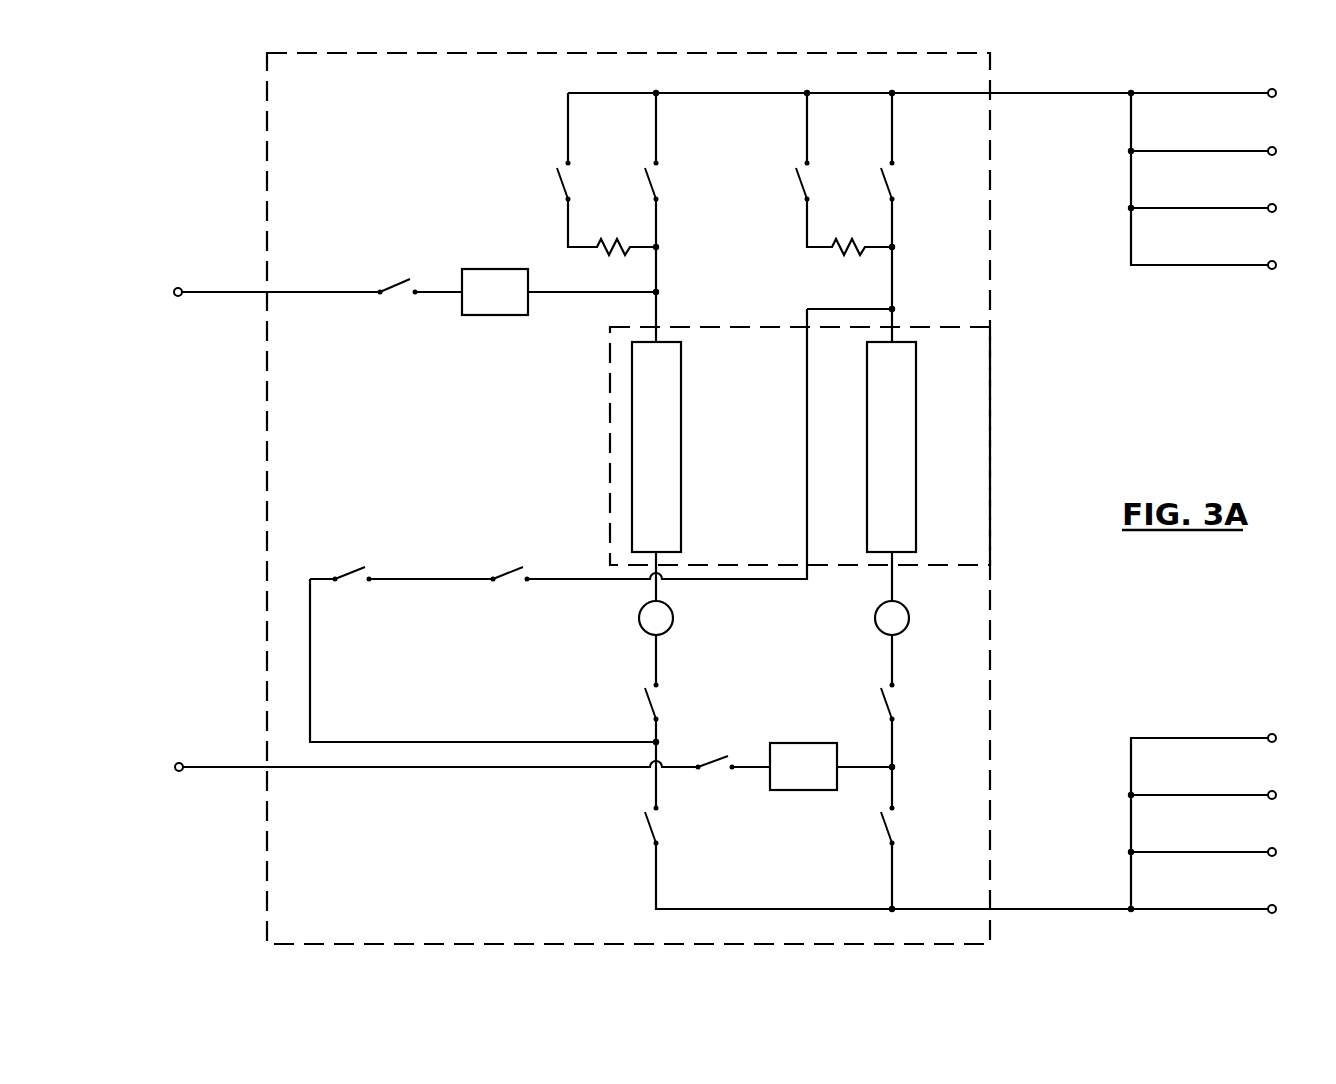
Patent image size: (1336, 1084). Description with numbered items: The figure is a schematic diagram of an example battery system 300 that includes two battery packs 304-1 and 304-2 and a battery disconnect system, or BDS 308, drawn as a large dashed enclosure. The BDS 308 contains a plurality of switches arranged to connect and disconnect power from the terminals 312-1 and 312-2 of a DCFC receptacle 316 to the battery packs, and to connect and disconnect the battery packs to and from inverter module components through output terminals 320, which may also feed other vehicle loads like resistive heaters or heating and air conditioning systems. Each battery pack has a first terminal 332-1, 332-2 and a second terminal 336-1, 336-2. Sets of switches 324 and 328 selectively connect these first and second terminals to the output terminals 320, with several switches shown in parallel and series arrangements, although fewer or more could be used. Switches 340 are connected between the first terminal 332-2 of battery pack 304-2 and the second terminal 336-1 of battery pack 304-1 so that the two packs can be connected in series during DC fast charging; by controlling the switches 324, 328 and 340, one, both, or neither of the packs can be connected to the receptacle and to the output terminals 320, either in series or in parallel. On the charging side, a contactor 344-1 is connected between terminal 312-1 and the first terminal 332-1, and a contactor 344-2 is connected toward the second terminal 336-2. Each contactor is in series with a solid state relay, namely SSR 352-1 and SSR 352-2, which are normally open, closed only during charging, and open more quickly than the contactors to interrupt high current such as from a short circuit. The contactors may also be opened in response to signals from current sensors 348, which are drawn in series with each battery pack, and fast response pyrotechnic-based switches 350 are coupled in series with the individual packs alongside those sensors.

The battery system 300 is at (168, 136).
The battery pack 304-1 is at (682, 447).
The battery pack 304-2 is at (917, 447).
The BDS 308 is at (265, 500).
The terminal 312-1 is at (172, 292).
The terminal 312-2 is at (172, 767).
The DCFC receptacle 316 is at (104, 514).
The output terminals 320 is at (1272, 306).
The set of switches 324 is at (500, 177).
The set of switches 328 is at (600, 848).
The first terminal 332-1 is at (650, 310).
The first terminal 332-2 is at (896, 309).
The second terminal 336-1 is at (655, 589).
The second terminal 336-2 is at (890, 582).
The switches 340 is at (395, 522).
The contactor 344-1 is at (383, 266).
The contactor 344-2 is at (718, 738).
The current sensor 348 is at (640, 632).
The pyrotechnic-based switch 350 is at (620, 709).
The solid state relay 352-1 is at (483, 316).
The solid state relay 352-2 is at (800, 791).